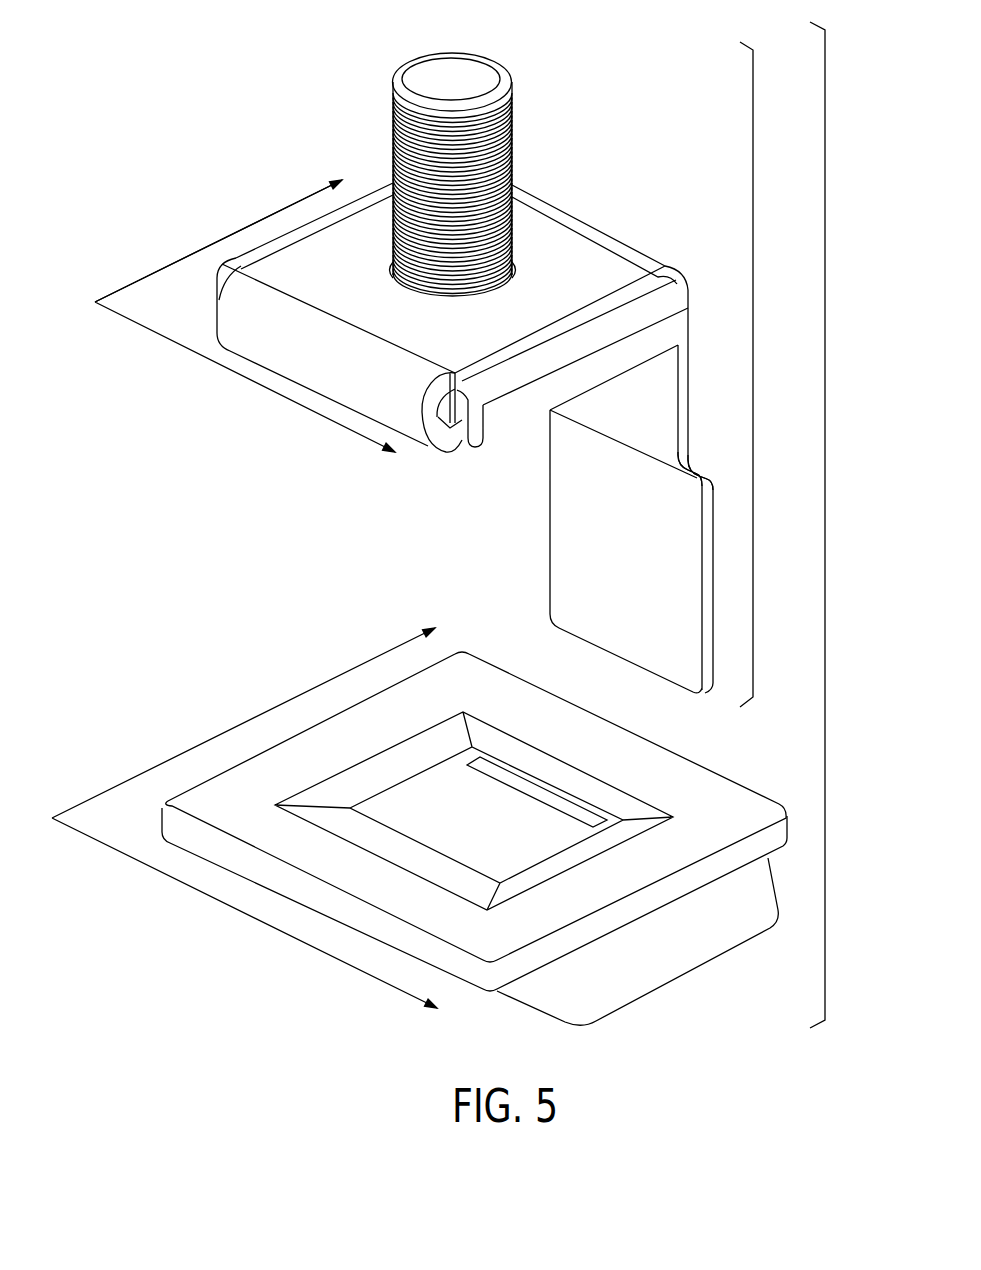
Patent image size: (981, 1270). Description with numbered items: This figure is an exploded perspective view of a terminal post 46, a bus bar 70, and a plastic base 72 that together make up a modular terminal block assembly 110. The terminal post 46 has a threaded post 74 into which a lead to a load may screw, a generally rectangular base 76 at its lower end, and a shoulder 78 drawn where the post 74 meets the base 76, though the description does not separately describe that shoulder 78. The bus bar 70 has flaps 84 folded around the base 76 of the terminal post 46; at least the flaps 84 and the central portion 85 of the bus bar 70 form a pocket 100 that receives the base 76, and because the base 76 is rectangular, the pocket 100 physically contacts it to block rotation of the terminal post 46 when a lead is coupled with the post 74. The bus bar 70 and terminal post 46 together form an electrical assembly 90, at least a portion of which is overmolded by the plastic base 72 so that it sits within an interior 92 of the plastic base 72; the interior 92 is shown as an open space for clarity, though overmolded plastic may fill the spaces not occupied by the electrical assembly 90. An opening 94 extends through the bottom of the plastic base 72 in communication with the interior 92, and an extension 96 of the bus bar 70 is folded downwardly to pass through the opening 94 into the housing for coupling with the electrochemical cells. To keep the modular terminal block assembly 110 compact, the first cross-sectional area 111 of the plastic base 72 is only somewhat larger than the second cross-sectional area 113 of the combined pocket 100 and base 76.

The terminal post 46 is at (477, 168).
The post 74 is at (393, 118).
The fastener base 78 is at (457, 298).
The bus bar 70 is at (450, 374).
The flaps 84 is at (371, 186).
The central portion 85 is at (540, 245).
The base 76 is at (460, 420).
The electrical assembly 90 is at (763, 379).
The extension 96 is at (693, 462).
The pocket 100 is at (205, 292).
The second cross-sectional area 113 is at (216, 242).
The plastic base 72 is at (436, 822).
The interior 92 is at (446, 810).
The opening 94 is at (540, 782).
The first cross-sectional area 111 is at (282, 700).
The modular terminal block assembly 110 is at (838, 478).